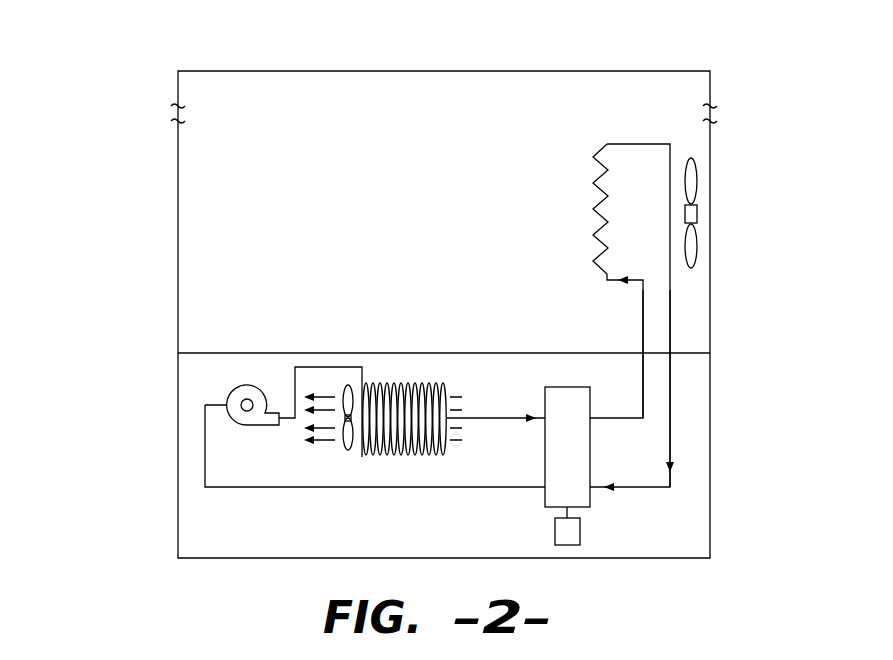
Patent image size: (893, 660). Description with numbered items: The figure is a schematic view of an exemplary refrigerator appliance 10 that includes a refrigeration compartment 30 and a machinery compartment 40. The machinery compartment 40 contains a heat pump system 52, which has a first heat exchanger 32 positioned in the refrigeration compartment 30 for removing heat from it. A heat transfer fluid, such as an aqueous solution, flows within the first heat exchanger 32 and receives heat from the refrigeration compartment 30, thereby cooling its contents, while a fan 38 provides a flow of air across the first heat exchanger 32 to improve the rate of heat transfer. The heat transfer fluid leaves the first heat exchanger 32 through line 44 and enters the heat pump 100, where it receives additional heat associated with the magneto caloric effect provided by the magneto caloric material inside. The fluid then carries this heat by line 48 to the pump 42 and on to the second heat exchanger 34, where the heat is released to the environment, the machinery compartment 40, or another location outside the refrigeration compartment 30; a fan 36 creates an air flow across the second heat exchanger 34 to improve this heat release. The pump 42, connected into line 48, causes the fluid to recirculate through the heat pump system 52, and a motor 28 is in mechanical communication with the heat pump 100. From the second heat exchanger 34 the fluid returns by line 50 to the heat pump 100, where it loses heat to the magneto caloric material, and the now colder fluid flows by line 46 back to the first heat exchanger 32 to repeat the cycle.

The refrigerator appliance 10 is at (115, 158).
The motor 28 is at (555, 530).
The refrigeration compartment 30 is at (439, 98).
The first heat exchanger 32 is at (593, 185).
The second heat exchanger 34 is at (417, 382).
The fan 36 is at (346, 386).
The fan 38 is at (698, 186).
The machinery compartment 40 is at (200, 382).
The pump 42 is at (233, 388).
The line 44 is at (672, 316).
The line 46 is at (643, 327).
The line 48 is at (299, 367).
The line 50 is at (490, 417).
The heat pump system 52 is at (377, 335).
The heat pump 100 is at (569, 386).